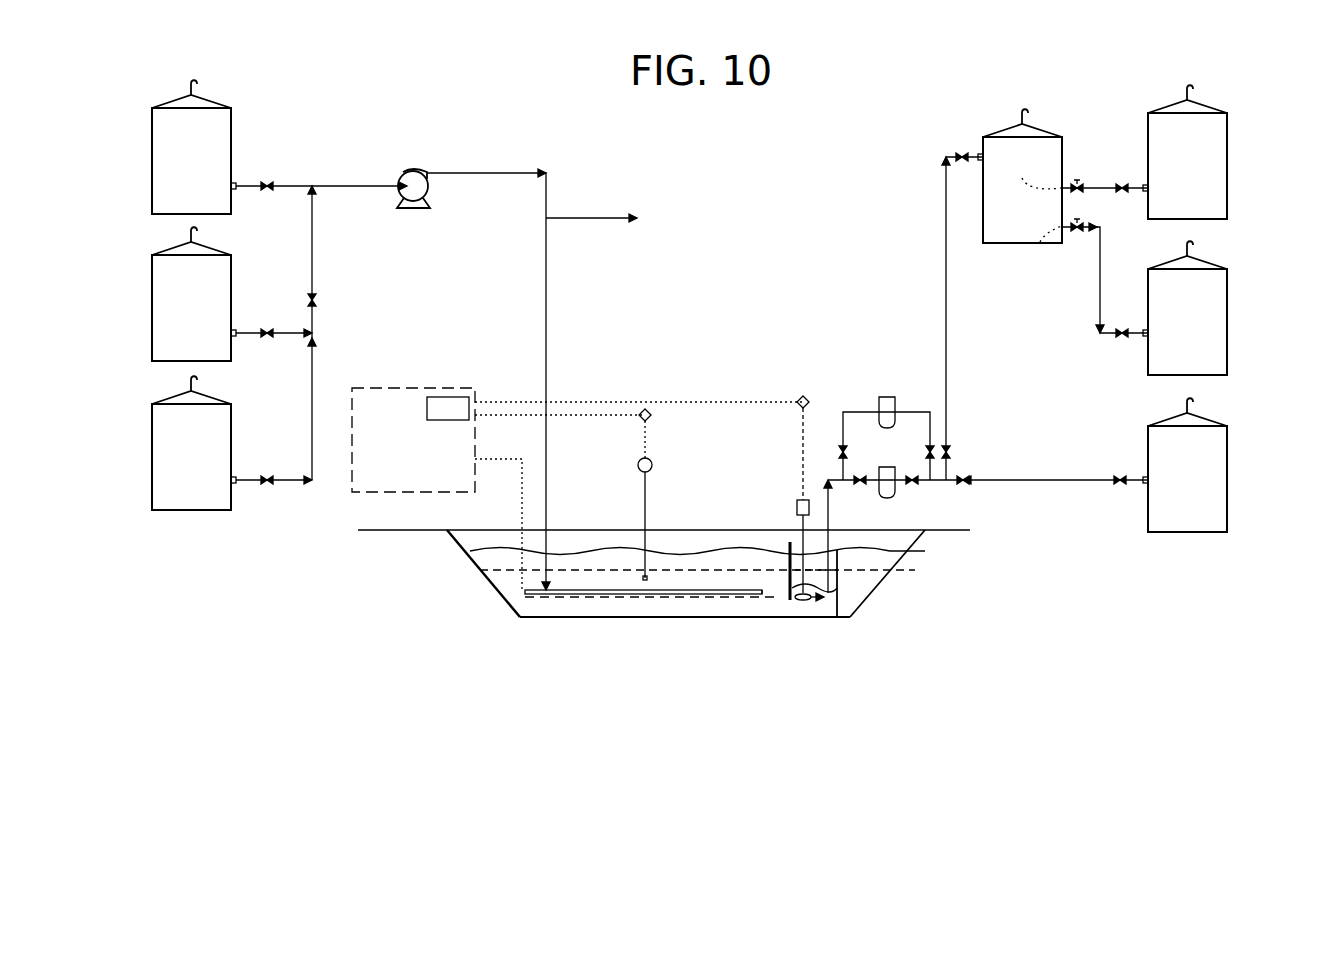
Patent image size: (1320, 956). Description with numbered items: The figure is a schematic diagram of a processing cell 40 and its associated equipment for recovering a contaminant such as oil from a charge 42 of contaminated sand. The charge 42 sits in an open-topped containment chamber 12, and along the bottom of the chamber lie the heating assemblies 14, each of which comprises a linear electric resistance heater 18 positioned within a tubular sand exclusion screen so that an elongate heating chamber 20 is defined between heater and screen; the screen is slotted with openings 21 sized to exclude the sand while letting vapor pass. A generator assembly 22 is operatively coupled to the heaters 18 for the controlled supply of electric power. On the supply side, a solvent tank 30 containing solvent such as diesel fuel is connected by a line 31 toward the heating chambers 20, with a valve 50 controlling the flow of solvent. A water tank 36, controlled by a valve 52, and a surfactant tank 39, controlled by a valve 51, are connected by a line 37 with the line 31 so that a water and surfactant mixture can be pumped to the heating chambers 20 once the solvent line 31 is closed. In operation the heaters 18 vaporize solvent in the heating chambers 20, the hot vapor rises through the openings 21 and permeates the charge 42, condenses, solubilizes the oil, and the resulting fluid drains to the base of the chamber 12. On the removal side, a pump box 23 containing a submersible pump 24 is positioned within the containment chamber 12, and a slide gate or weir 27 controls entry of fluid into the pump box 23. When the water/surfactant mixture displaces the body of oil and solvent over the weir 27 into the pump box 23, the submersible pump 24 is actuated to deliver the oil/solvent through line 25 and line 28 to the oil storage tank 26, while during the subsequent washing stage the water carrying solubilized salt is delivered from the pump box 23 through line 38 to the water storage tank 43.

The containment chamber 12 is at (600, 553).
The heating assembly 14 is at (556, 597).
The linear electric resistance heater 18 is at (603, 597).
The heating chamber 20 is at (672, 598).
The openings 21 is at (718, 601).
The generator assembly 22 is at (405, 388).
The pump box 23 is at (850, 565).
The submersible pump 24 is at (797, 507).
The line 25 is at (830, 513).
The storage tank 26 is at (1228, 472).
The weir 27 is at (790, 588).
The line 28 is at (1027, 483).
The solvent tank 30 is at (232, 137).
The line 31 is at (336, 184).
The water tank 36 is at (232, 282).
The line 37 is at (314, 262).
The line 38 is at (948, 341).
The surfactant tank 39 is at (232, 431).
The processing cell 40 is at (915, 560).
The charge 42 is at (762, 594).
The water storage tank 43 is at (1062, 160).
The valve 50 is at (271, 182).
The valve 51 is at (271, 476).
The valve 52 is at (271, 329).